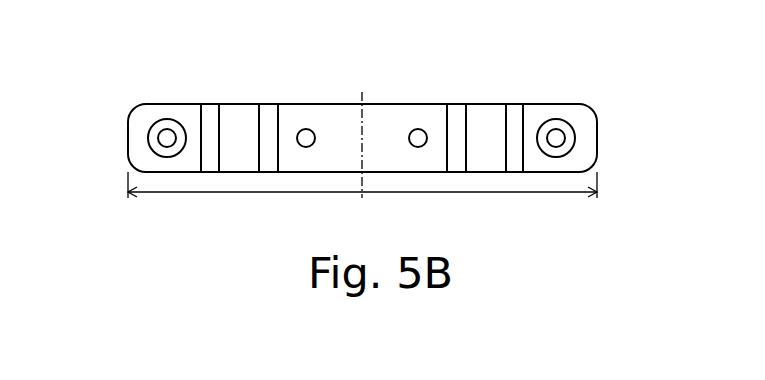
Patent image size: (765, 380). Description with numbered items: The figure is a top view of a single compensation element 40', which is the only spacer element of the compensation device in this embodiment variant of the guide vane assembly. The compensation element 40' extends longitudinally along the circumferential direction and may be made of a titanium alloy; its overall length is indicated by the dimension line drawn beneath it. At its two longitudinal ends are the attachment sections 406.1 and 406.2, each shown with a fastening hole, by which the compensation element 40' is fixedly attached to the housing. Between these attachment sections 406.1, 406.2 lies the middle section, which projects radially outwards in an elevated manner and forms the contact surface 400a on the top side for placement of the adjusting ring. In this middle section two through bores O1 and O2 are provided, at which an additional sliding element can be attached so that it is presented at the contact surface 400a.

The contact surface 400a is at (388, 122).
The compensation element 40' is at (320, 168).
The attachment section 406.1 is at (167, 116).
The attachment section 406.2 is at (556, 116).
The through bore O1 is at (305, 129).
The through bore O2 is at (419, 129).